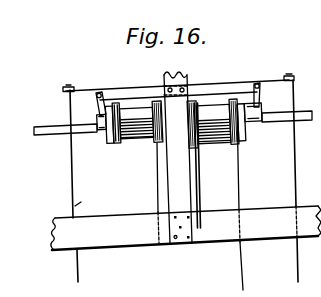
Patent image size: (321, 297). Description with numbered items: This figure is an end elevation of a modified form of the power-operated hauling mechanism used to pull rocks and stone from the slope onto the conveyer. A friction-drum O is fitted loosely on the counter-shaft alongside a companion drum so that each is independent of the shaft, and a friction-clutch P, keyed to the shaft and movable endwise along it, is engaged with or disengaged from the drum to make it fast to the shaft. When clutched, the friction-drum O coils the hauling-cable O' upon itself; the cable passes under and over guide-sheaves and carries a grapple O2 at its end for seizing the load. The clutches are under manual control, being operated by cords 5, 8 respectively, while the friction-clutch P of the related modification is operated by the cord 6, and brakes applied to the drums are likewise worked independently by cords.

The friction-drum O is at (137, 106).
The grapple O2 is at (219, 107).
The hauling-cable O' is at (148, 193).
The friction-clutch P is at (113, 134).
The cord 5 is at (77, 265).
The cord 6 is at (199, 170).
The cord 8 is at (300, 261).